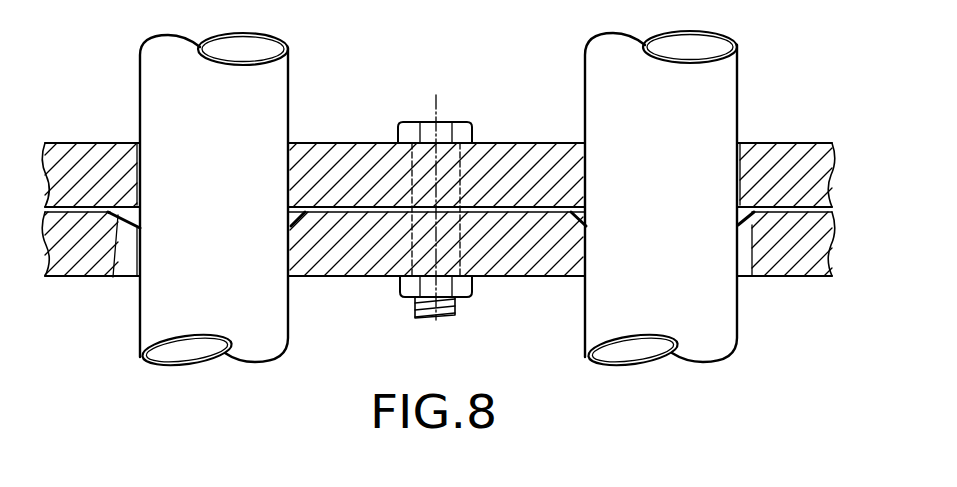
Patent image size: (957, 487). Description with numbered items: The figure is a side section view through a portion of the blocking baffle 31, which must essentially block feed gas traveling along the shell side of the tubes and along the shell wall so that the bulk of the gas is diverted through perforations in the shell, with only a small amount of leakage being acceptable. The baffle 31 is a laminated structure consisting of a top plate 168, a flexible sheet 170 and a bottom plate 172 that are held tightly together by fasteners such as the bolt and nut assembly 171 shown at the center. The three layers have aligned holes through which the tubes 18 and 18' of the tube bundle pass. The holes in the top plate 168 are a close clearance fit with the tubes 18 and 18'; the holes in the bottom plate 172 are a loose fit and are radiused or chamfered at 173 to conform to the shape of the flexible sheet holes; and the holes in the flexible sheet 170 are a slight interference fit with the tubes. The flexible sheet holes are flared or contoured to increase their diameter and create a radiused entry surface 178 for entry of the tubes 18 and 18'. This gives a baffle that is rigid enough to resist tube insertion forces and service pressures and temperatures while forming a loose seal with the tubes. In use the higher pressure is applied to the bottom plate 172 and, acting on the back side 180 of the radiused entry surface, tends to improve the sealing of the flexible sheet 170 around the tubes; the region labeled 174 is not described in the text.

The tube 18 is at (689, 200).
The tube 18' is at (246, 200).
The blocking baffle 31 is at (843, 143).
The top plate 168 is at (117, 143).
The flexible sheet 170 is at (80, 143).
The bolt and nut assembly 171 is at (440, 118).
The bottom plate 172 is at (88, 277).
The radiused or chamfered hole edge 173 is at (113, 277).
The upper plate portion 174 is at (739, 141).
The radiused entry surface 178 is at (295, 205).
The back side of radiused entry surface 180 is at (296, 214).